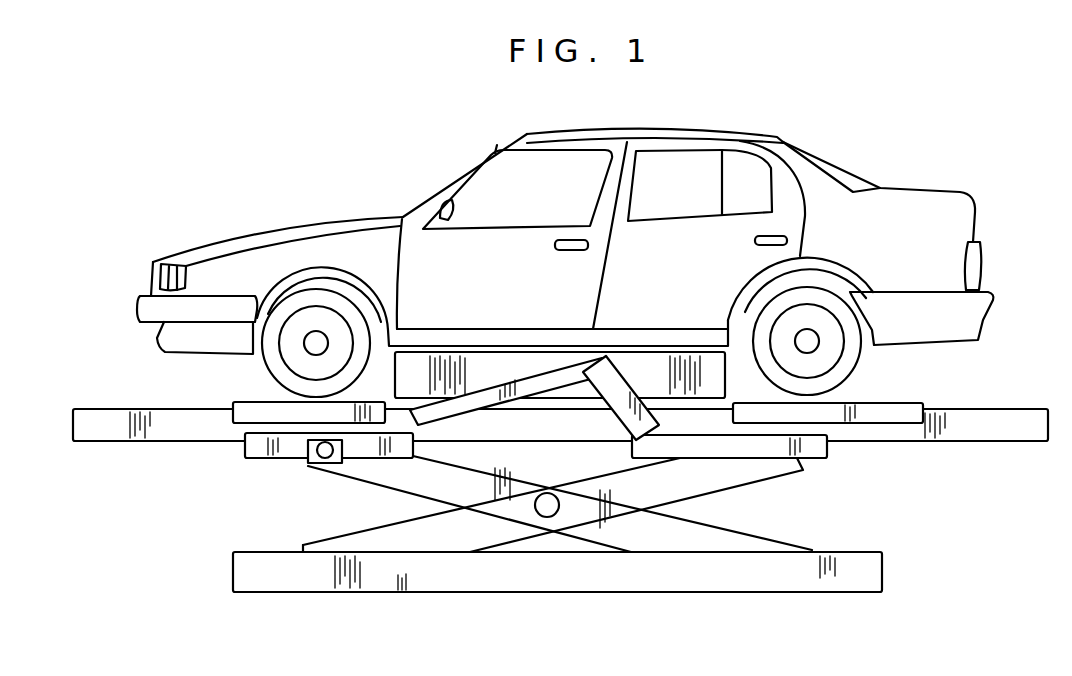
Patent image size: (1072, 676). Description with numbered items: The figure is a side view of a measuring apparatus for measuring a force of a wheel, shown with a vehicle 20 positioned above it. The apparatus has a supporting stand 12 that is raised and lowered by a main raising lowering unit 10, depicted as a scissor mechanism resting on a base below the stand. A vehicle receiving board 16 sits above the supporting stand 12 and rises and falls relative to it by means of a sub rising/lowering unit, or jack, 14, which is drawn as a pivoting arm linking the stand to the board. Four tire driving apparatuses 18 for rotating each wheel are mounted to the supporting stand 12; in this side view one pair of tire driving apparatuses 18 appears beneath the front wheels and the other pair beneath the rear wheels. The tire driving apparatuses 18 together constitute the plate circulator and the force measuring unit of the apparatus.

The main raising lowering unit 10 is at (732, 478).
The supporting stand 12 is at (962, 442).
The sub rising/lowering unit 14 is at (532, 388).
The vehicle receiving board 16 is at (718, 378).
The tire driving apparatuses 18 is at (252, 412).
The vehicle 20 is at (263, 228).